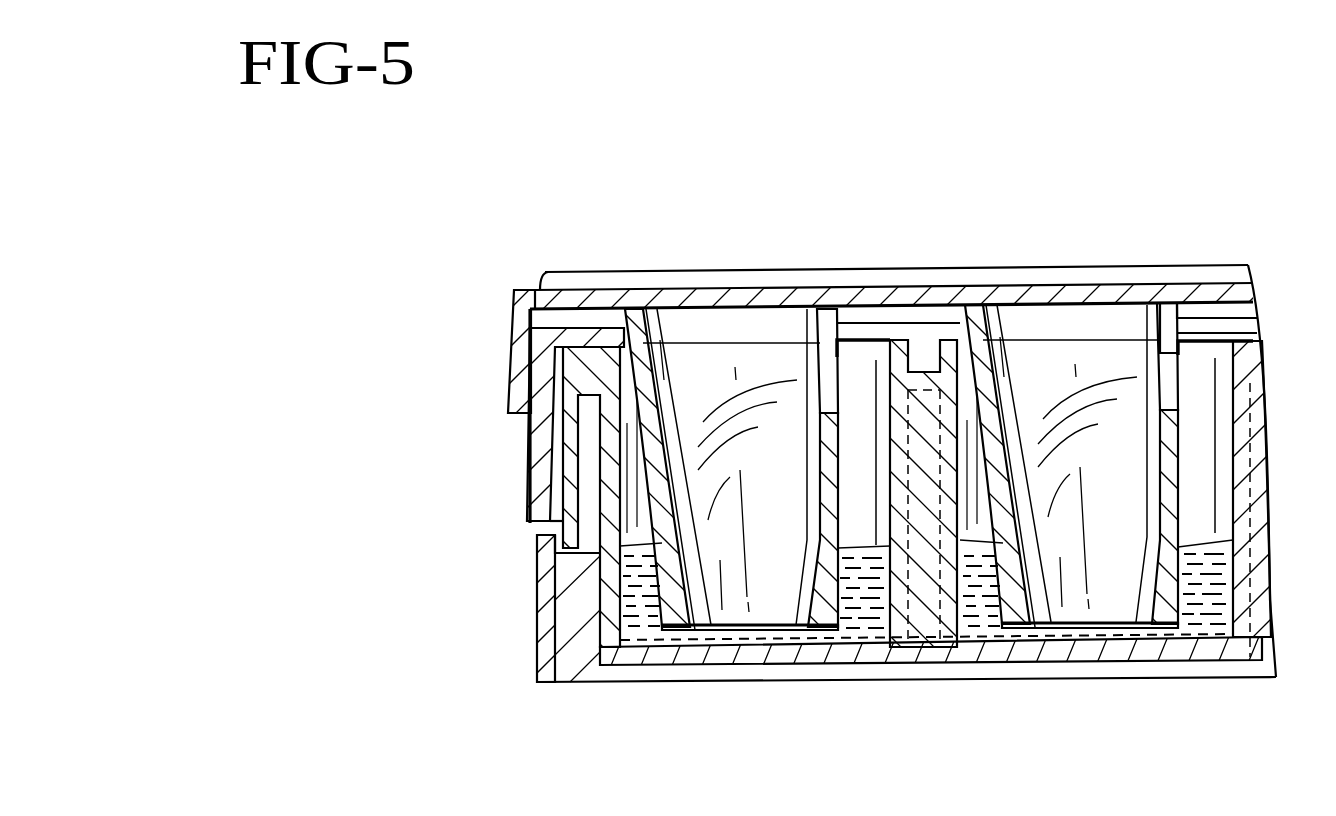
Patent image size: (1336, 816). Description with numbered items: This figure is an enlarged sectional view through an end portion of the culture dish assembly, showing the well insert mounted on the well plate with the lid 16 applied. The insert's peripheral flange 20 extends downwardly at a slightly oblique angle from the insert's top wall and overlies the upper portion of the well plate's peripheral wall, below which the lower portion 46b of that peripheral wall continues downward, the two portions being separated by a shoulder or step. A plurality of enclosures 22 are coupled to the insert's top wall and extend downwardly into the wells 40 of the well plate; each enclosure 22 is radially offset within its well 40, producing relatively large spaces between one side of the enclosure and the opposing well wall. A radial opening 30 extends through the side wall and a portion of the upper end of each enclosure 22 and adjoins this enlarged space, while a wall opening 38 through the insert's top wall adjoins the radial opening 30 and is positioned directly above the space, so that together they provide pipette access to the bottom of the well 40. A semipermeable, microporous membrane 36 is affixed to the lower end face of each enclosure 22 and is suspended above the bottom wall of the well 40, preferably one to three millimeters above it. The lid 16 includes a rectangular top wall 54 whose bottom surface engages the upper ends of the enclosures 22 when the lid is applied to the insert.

The lid 16 is at (493, 327).
The peripheral flange 20 is at (528, 478).
The enclosure 22 is at (690, 388).
The radial opening 30 is at (818, 378).
The membrane 36 is at (748, 626).
The wall opening 38 is at (860, 331).
The well 40 is at (610, 562).
The lower portion of peripheral wall 46b is at (535, 620).
The top wall of lid 54 is at (1013, 282).